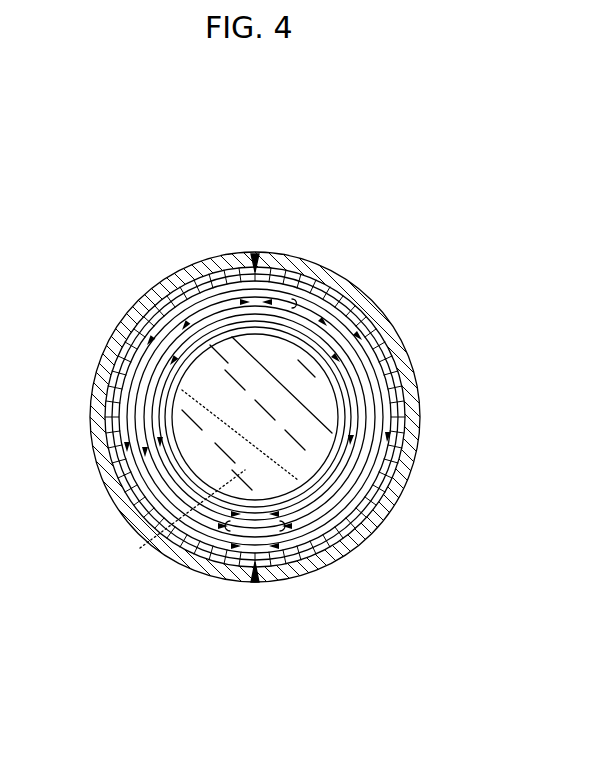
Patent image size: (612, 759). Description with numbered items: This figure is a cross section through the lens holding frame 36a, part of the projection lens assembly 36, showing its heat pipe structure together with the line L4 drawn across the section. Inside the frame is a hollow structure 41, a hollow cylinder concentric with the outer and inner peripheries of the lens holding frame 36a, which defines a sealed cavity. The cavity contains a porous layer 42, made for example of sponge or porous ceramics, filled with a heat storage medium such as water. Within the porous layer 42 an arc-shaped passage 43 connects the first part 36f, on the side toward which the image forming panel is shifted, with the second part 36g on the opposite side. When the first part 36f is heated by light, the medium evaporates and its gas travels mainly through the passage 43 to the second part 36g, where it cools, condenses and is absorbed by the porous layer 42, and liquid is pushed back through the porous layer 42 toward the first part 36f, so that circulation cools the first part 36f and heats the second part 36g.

The roller 36 is at (146, 264).
The lens holding frame 36a is at (357, 293).
The second part 36g is at (254, 254).
The first part 36f is at (256, 583).
The hollow structure 41 is at (127, 352).
The porous layer 42 is at (116, 397).
The passage 43 is at (370, 407).
The line L4 is at (176, 517).